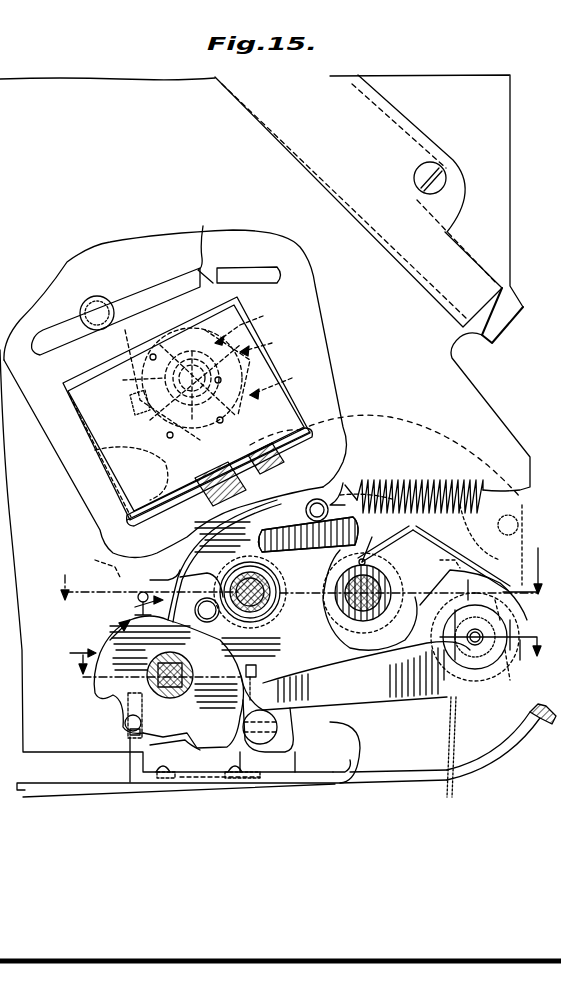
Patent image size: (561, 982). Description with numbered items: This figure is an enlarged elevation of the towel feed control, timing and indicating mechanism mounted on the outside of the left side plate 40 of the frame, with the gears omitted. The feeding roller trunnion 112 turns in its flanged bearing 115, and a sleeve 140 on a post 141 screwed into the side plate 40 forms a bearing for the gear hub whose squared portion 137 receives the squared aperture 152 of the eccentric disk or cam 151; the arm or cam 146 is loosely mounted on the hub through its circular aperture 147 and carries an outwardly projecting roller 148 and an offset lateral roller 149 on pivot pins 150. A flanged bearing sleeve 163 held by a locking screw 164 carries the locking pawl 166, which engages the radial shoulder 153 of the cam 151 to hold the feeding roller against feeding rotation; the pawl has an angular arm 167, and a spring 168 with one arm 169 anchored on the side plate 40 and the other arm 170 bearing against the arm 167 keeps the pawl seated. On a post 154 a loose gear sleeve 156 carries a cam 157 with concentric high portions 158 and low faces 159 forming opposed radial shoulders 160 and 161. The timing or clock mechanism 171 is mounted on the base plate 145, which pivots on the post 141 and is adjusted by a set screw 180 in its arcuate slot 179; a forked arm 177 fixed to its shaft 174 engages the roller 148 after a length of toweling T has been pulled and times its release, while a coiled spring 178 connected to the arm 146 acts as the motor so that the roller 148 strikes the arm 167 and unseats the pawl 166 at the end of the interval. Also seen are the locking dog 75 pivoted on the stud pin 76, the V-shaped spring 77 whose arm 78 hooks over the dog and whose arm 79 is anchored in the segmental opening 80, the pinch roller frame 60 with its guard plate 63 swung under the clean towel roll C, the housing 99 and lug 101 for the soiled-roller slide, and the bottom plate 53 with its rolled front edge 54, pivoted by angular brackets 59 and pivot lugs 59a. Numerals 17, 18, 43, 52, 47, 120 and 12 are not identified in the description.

The side plate 40 is at (280, 518).
The housing 99 is at (272, 127).
The lug 101 is at (497, 338).
The base plate 145 is at (30, 312).
The set screw 180 is at (101, 297).
The arcuate slot 179 is at (195, 244).
The timing or clock mechanism 171 is at (78, 405).
The shaft 174 is at (92, 440).
The spring arm 78 is at (103, 460).
The stud pin 76 is at (128, 385).
The V-shaped spring 77 is at (251, 326).
The locking dog 75 is at (88, 536).
The spring arm 79 is at (283, 383).
The forked arm 177 is at (230, 477).
The segmental opening 80 is at (345, 452).
The pinch roller frame 60 is at (428, 433).
The roller 148 is at (330, 498).
The pivot pin 150 is at (396, 490).
The coiled spring 178 is at (420, 490).
The guard plate 63 is at (478, 532).
The spring 168 is at (460, 548).
The spring arm 170 is at (385, 577).
The arm 167 is at (309, 534).
The squared aperture 152 is at (278, 615).
The sleeve 140 is at (275, 575).
The circular aperture 147 is at (276, 584).
The arm or cam 146 is at (278, 600).
The post 141 is at (278, 608).
The lateral roller 149 is at (213, 616).
The squared portion 137 is at (151, 577).
The eccentric disk or cam 151 is at (135, 588).
The clean towel roll C is at (97, 560).
The section line 17 is at (303, 472).
The radial shoulder 160 is at (120, 600).
The high portion 158 is at (116, 674).
The cam 157 is at (67, 651).
The section line 18 is at (303, 663).
The post 154 is at (148, 672).
The sleeve 156 is at (150, 685).
The radial shoulder 161 is at (122, 700).
The low face 159 is at (128, 720).
The pivot lug 59a is at (128, 740).
The angular bracket 59 is at (210, 788).
The radial shoulder 153 is at (258, 746).
The bracket 43 is at (298, 745).
The bottom plate 53 is at (284, 786).
The rolled front edge 54 is at (362, 748).
The rail 52 is at (232, 780).
The rail end 47 is at (503, 750).
The spring arm 169 is at (437, 747).
The toweling T is at (456, 735).
The locking screw 164 is at (480, 645).
The flanged bearing sleeve 163 is at (470, 672).
The locking pawl 166 is at (366, 672).
The flanged bearing 115 is at (375, 622).
The trunnion 112 is at (385, 612).
The shaft 120 is at (365, 622).
The section line 12 is at (556, 620).